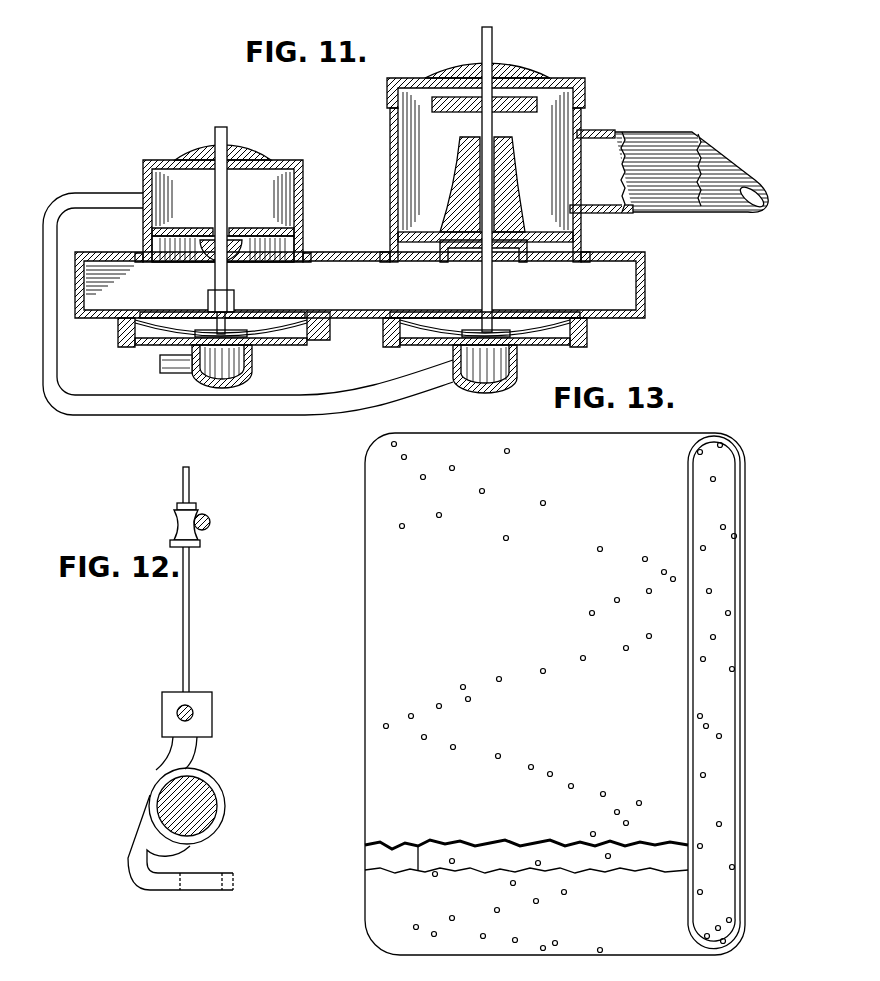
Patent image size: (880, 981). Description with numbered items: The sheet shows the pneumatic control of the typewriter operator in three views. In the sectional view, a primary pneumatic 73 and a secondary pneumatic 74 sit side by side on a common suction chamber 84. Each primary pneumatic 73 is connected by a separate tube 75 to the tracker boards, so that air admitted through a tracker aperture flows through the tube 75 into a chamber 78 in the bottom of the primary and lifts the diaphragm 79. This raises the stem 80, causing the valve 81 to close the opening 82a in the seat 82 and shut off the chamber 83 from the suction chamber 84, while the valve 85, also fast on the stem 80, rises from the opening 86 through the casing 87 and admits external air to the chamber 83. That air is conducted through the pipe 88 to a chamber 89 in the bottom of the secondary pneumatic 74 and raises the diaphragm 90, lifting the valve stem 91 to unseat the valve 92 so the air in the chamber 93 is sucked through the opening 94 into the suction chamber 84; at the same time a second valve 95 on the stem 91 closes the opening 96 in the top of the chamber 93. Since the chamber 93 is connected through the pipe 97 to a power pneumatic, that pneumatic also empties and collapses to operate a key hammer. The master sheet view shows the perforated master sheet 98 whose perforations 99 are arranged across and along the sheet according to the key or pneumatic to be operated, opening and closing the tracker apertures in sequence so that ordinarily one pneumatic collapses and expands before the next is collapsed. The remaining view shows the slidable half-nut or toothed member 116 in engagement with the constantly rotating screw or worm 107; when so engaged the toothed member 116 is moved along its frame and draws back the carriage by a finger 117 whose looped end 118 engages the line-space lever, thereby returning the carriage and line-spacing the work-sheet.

In FIG. 11, the primary pneumatic 73 is at (300, 334).
In FIG. 11, the secondary pneumatic 74 is at (581, 341).
In FIG. 11, the tube 75 is at (158, 372).
In FIG. 11, the chamber 78 is at (230, 357).
In FIG. 11, the diaphragm 79 is at (298, 330).
In FIG. 11, the stem 80 is at (234, 283).
In FIG. 11, the valve 81 is at (214, 252).
In FIG. 11, the seat 82 is at (187, 244).
In FIG. 11, the opening 82a is at (223, 220).
In FIG. 11, the chamber 83 is at (223, 199).
In FIG. 11, the suction chamber 84 is at (360, 285).
In FIG. 11, the valve 85 is at (246, 151).
In FIG. 11, the opening 86 is at (212, 168).
In FIG. 11, the casing 87 is at (151, 161).
In FIG. 11, the pipe 88 is at (48, 362).
In FIG. 11, the chamber 89 is at (486, 378).
In FIG. 11, the diaphragm 90 is at (538, 336).
In FIG. 11, the valve stem 91 is at (492, 290).
In FIG. 11, the valve 92 is at (495, 184).
In FIG. 11, the chamber 93 is at (485, 170).
In FIG. 11, the opening 94 is at (466, 234).
In FIG. 11, the second valve 95 is at (460, 106).
In FIG. 11, the opening 96 is at (512, 80).
In FIG. 11, the pipe 97 is at (669, 171).
In FIG. 13, the master sheet 98 is at (374, 568).
In FIG. 13, the perforations 99 is at (460, 687).
In FIG. 12, the screw or worm 107 is at (196, 784).
In FIG. 12, the half-nut or toothed member 116 is at (148, 793).
In FIG. 12, the finger 117 is at (138, 873).
In FIG. 12, the looped end 118 is at (223, 884).